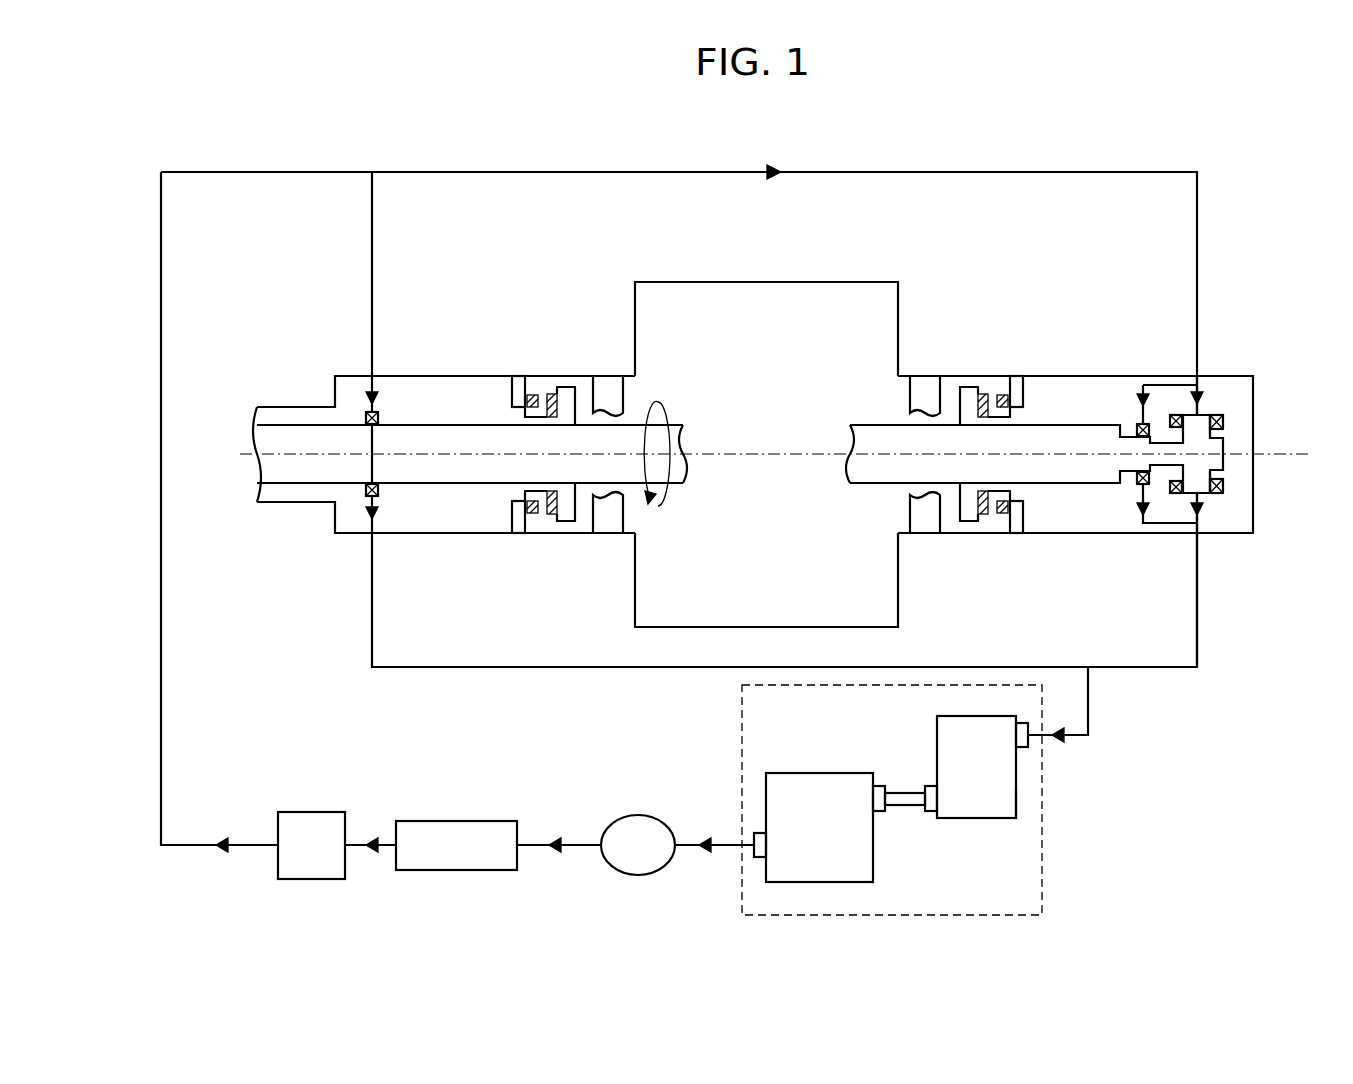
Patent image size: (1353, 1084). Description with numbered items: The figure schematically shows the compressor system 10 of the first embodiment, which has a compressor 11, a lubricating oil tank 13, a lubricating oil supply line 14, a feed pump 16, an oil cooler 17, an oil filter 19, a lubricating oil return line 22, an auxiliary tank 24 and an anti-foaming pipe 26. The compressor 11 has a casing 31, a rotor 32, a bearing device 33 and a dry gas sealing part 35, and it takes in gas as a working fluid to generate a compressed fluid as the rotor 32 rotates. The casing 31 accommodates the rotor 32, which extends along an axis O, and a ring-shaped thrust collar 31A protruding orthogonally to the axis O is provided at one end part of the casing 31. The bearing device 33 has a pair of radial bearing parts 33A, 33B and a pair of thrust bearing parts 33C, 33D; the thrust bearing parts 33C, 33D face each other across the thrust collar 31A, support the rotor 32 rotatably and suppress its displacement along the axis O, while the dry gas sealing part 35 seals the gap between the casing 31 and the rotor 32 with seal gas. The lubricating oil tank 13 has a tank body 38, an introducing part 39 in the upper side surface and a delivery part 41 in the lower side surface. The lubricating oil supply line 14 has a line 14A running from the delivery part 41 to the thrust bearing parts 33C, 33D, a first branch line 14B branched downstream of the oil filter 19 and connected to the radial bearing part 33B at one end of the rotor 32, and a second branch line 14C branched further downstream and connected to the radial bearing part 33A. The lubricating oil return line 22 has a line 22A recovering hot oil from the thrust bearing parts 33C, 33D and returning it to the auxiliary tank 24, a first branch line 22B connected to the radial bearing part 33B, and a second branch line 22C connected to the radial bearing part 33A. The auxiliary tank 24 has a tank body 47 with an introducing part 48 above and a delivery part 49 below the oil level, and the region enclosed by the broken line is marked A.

The compressor system 10 is at (113, 104).
The compressor 11 is at (766, 419).
The lubricating oil tank 13 is at (911, 824).
The lubricating oil supply line 14 is at (156, 714).
The line 14A is at (270, 172).
The first branch line 14B is at (372, 245).
The second branch line 14C is at (1155, 380).
The feed pump 16 is at (638, 875).
The oil cooler 17 is at (460, 870).
The oil filter 19 is at (311, 879).
The lubricating oil return line 22 is at (495, 674).
The line 22A is at (1200, 665).
The first branch line 22B is at (372, 648).
The second branch line 22C is at (1170, 533).
The auxiliary tank 24 is at (1026, 772).
The anti-foaming pipe 26 is at (903, 814).
The casing 31 is at (795, 281).
The thrust collar 31A is at (1205, 416).
The rotor 32 is at (757, 406).
The bearing device 33 is at (785, 418).
The radial bearing part 33A is at (1138, 422).
The radial bearing part 33B is at (364, 488).
The thrust bearing part 33C is at (1176, 413).
The thrust bearing part 33D is at (1218, 496).
The dry gas sealing part 35 is at (540, 380).
The tank body 38 is at (818, 773).
The introducing part 39 is at (878, 790).
The delivery part 41 is at (760, 858).
The tank body 47 is at (1016, 805).
The introducing part 48 is at (1022, 745).
The delivery part 49 is at (930, 810).
The region A is at (1042, 895).
The axis O is at (1290, 452).